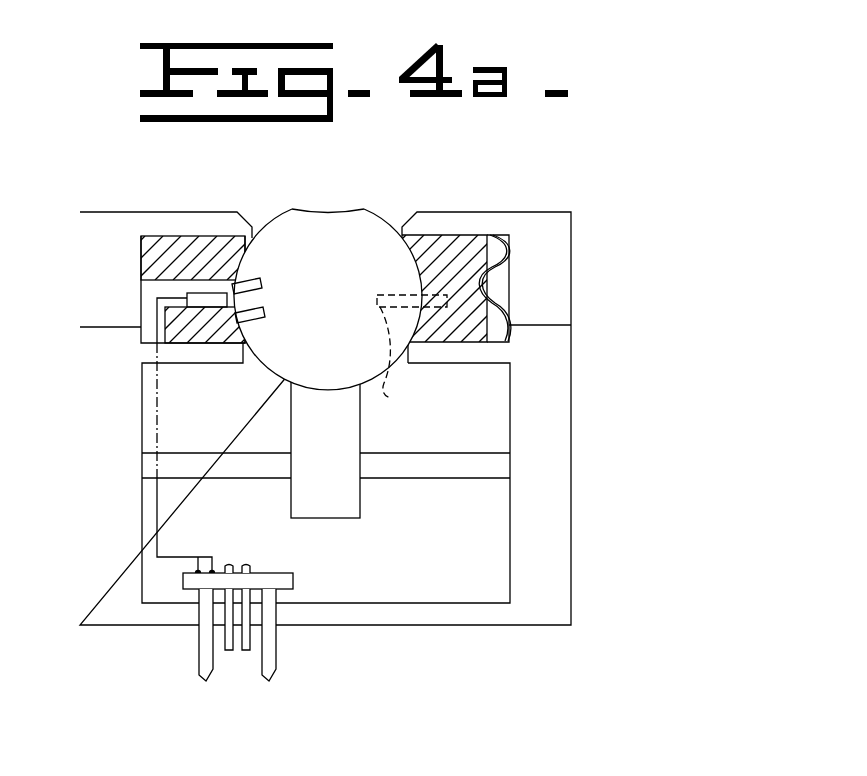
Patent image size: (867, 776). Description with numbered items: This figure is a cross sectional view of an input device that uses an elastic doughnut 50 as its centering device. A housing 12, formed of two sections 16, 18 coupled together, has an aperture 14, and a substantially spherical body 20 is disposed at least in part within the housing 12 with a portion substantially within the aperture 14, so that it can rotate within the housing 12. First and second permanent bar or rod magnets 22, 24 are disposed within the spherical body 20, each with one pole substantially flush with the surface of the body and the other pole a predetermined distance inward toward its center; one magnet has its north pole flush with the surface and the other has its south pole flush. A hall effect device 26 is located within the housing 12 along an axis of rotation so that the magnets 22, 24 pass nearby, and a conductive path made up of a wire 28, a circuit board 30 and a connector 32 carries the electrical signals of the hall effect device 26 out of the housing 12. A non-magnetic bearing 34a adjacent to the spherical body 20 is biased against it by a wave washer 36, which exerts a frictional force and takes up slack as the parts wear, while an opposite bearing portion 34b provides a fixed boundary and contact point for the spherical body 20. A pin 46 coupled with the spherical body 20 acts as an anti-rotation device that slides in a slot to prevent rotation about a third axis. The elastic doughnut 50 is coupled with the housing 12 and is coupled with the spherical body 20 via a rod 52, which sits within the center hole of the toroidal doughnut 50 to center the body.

The housing 12 is at (672, 287).
The aperture 14 is at (277, 215).
The housing section 16 is at (572, 245).
The housing section 18 is at (571, 367).
The spherical body 20 is at (378, 215).
The first permanent magnet 22 is at (247, 278).
The second permanent magnet 24 is at (247, 321).
The hall effect device 26 is at (210, 292).
The wire 28 is at (157, 508).
The circuit board 30 is at (280, 590).
The connector 32 is at (233, 672).
The non-magnetic bearing 34a is at (443, 243).
The second bearing portion 34b is at (161, 252).
The wave washer 36 is at (497, 249).
The pin 46 is at (387, 398).
The elastic doughnut 50 is at (425, 479).
The rod 52 is at (360, 408).